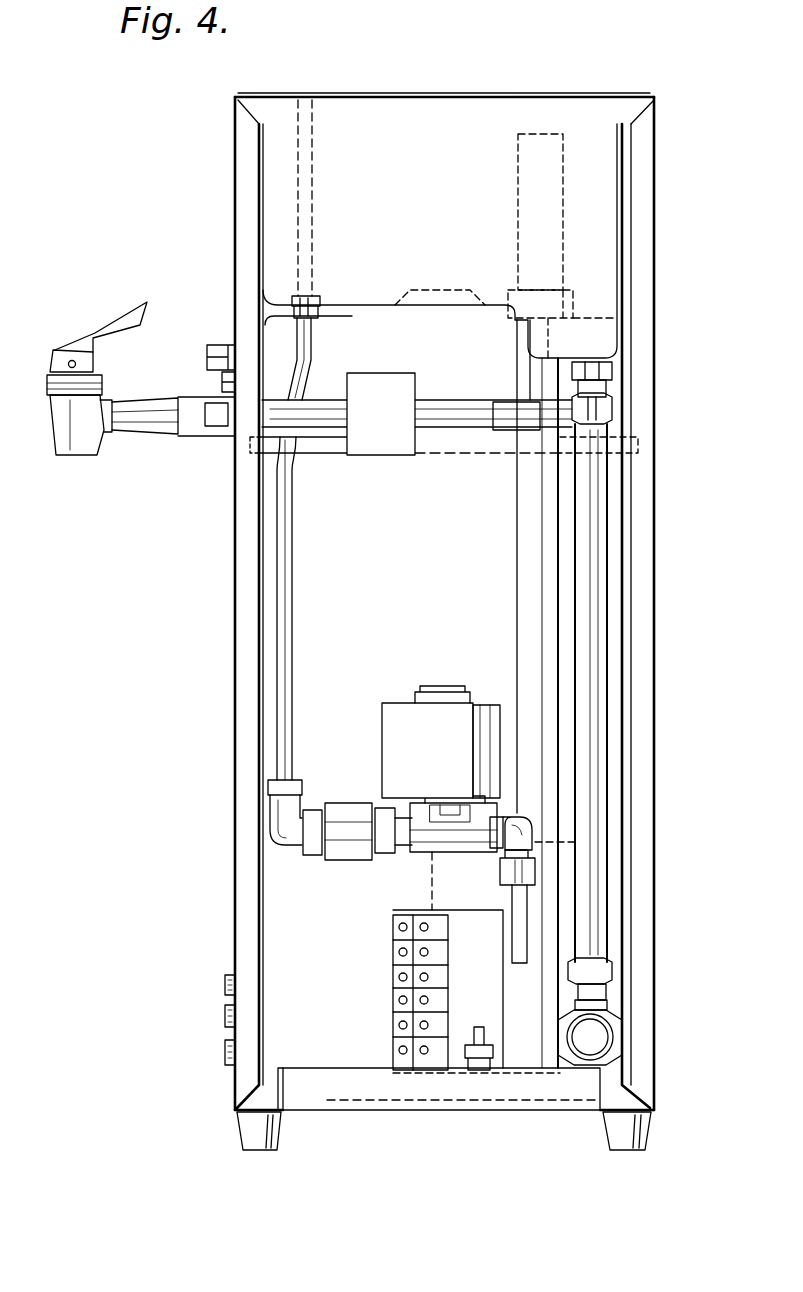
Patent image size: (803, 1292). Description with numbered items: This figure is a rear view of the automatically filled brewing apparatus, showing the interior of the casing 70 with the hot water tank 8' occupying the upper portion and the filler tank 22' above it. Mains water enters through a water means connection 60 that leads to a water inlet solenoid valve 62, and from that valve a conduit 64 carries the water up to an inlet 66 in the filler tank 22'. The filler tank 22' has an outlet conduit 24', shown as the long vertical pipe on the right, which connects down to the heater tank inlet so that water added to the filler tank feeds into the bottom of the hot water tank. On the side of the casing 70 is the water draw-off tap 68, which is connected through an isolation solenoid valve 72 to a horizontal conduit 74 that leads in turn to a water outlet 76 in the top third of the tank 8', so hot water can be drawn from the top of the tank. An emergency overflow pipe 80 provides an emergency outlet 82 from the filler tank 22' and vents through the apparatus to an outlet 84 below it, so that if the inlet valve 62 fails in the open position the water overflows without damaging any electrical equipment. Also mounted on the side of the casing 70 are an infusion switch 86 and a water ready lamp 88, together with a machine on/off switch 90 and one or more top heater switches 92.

The hot water tank 8' is at (465, 621).
The filler tank 22' is at (440, 241).
The outlet conduit 24' is at (627, 713).
The water means connection 60 is at (527, 922).
The water inlet solenoid valve 62 is at (385, 740).
The conduit 64 is at (292, 605).
The inlet 66 is at (314, 134).
The water draw-off tap 68 is at (90, 445).
The casing 70 is at (238, 473).
The isolation solenoid valve 72 is at (415, 455).
The conduit 74 is at (555, 405).
The water outlet 76 is at (612, 413).
The emergency overflow pipe 80 is at (560, 248).
The emergency outlet 82 is at (548, 133).
The outlet 84 is at (607, 1070).
The infusion switch 86 is at (222, 345).
The water ready lamp 88 is at (222, 375).
The machine on/off switch 90 is at (216, 1058).
The top heater switch 92 is at (225, 1018).